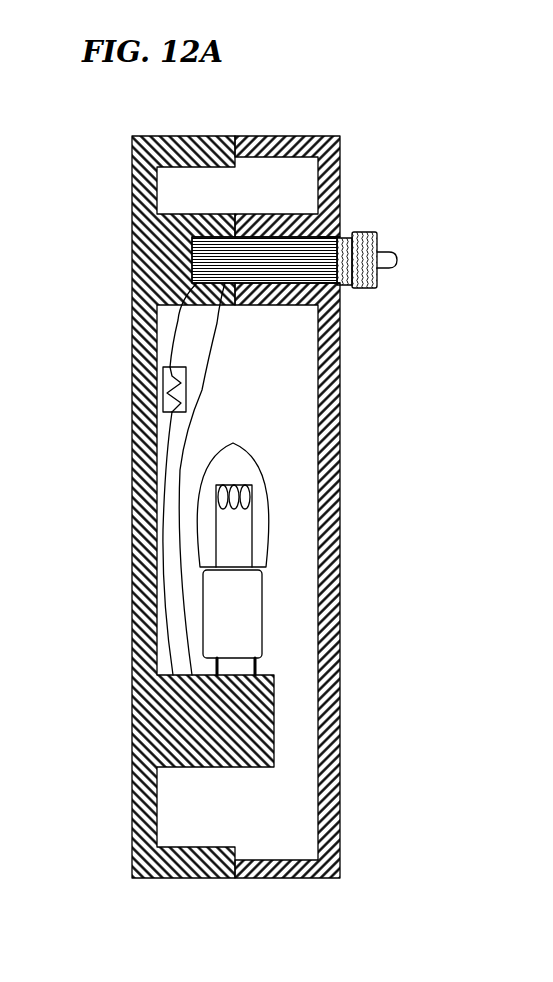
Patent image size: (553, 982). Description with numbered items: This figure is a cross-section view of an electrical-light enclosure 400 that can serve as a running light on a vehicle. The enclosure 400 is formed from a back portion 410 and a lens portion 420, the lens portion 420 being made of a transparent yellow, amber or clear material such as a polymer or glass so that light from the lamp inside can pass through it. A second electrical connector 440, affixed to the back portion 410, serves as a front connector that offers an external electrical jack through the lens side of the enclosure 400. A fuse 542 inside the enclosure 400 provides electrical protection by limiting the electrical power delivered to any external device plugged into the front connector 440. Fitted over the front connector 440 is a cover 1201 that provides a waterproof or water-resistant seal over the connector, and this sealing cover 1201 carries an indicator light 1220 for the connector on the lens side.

The enclosure 400 is at (228, 467).
The back portion 410 is at (175, 136).
The lens portion 420 is at (343, 180).
The second electrical connector 440 is at (340, 285).
The fuse 542 is at (163, 383).
The cover 1201 is at (378, 289).
The indicator light 1220 is at (397, 262).